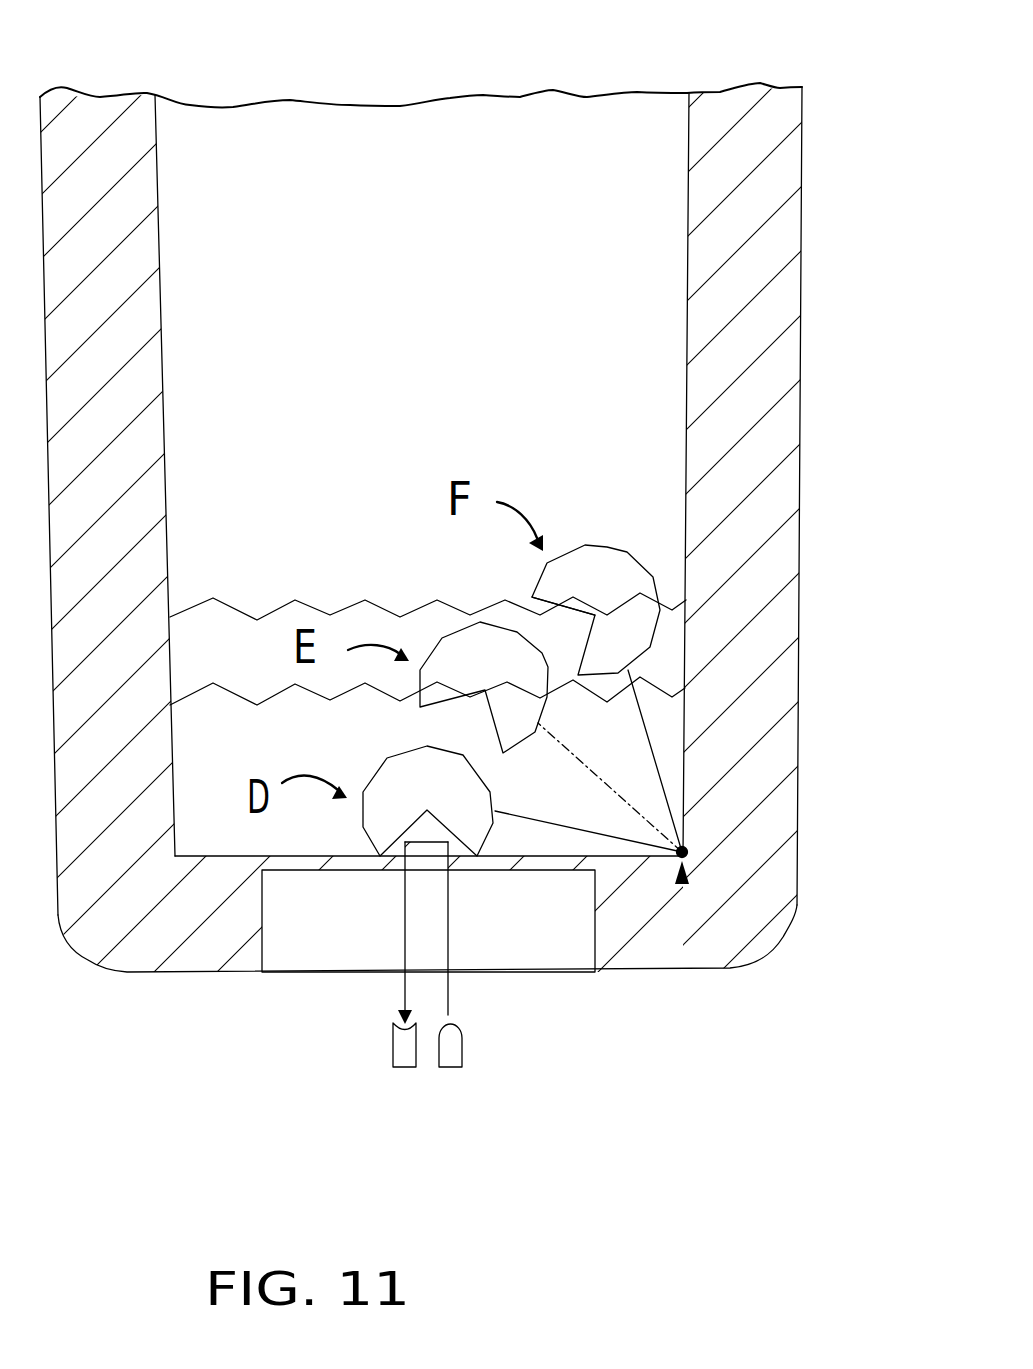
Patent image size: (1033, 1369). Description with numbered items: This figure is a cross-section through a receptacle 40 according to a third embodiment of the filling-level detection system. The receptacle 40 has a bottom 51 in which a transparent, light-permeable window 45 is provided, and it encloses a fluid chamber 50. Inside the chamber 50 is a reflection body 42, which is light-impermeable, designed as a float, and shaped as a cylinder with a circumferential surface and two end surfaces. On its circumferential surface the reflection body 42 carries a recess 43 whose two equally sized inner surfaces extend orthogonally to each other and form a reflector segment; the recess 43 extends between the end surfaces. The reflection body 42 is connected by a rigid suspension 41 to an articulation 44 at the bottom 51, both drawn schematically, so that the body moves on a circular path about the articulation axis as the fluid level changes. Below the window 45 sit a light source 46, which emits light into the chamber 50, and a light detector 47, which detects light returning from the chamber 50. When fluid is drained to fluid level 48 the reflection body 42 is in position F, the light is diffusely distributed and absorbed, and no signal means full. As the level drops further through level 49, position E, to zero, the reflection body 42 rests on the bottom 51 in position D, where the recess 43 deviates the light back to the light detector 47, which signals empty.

The receptacle 40 is at (780, 245).
The rigid suspension 41 is at (653, 757).
The reflection body 42 is at (577, 557).
The recess 43 is at (568, 613).
The articulation 44 is at (680, 885).
The transparent, light-permeable window 45 is at (303, 865).
The light source 46 is at (461, 1040).
The light detector 47 is at (396, 1049).
The fluid level 48 is at (215, 598).
The level 49 is at (218, 686).
The chamber 50 is at (558, 118).
The bottom 51 is at (168, 933).